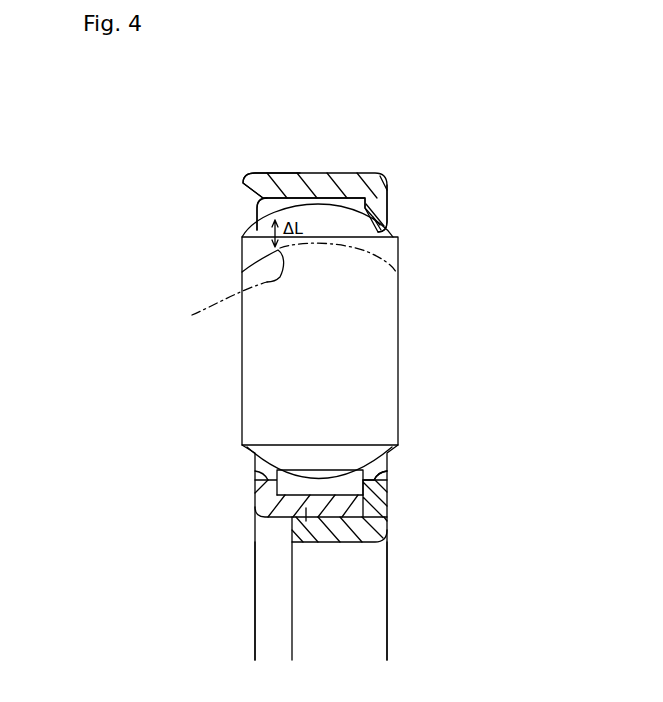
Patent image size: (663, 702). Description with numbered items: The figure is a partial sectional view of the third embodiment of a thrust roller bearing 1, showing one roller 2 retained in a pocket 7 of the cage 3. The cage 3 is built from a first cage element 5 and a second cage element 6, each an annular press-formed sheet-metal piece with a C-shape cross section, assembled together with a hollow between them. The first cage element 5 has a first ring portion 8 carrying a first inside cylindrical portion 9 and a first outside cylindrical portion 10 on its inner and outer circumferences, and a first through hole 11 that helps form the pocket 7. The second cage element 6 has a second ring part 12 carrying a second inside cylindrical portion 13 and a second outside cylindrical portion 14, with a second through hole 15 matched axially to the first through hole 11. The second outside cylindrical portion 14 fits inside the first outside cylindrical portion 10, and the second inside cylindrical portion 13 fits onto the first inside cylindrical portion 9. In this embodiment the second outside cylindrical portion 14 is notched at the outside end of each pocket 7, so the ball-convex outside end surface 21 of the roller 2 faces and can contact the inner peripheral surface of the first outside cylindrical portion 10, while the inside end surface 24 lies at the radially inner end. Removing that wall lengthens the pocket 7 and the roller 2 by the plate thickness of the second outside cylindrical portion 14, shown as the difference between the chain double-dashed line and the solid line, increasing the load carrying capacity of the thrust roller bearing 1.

The thrust roller bearing 1 is at (417, 295).
The roller 2 is at (382, 385).
The cage 3 is at (352, 170).
The first cage element 5 is at (368, 203).
The second cage element 6 is at (258, 502).
The pocket 7 is at (384, 471).
The first ring portion 8 is at (372, 502).
The first inside cylindrical portion 9 is at (332, 532).
The first outside cylindrical portion 10 is at (273, 190).
The first through hole 11 is at (388, 231).
The second ring part 12 is at (258, 489).
The second inside cylindrical portion 13 is at (292, 553).
The second outside cylindrical portion 14 is at (285, 190).
The second through hole 15 is at (255, 468).
The outside end surface 21 is at (250, 230).
The inside end surface 24 is at (386, 530).